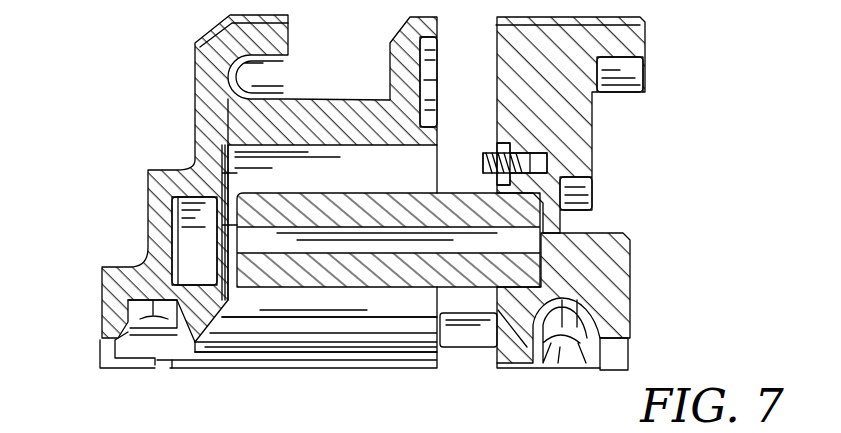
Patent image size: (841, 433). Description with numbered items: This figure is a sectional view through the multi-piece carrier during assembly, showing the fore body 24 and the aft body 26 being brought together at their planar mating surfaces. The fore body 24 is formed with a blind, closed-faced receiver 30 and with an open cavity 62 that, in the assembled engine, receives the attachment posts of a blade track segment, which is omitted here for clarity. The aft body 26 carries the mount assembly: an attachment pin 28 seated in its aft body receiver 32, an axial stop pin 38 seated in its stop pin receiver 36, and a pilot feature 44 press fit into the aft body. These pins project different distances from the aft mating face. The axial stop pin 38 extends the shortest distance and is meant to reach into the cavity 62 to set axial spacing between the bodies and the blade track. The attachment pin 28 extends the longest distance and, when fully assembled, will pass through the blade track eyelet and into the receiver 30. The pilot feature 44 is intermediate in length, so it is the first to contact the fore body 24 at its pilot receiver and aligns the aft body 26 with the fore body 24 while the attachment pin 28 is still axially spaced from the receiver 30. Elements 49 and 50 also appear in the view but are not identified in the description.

The fore body 24 is at (136, 104).
The aft body 26 is at (646, 130).
The attachment pin 28 is at (286, 279).
The closed-faced receiver 30 is at (190, 236).
The aft body receiver 32 is at (556, 255).
The stop pin receiver 36 is at (558, 169).
The axial stop pin 38 is at (487, 134).
The pilot feature 44 is at (475, 362).
The bore 49 is at (355, 432).
The sleeve 50 is at (399, 432).
The open cavity 62 is at (346, 165).